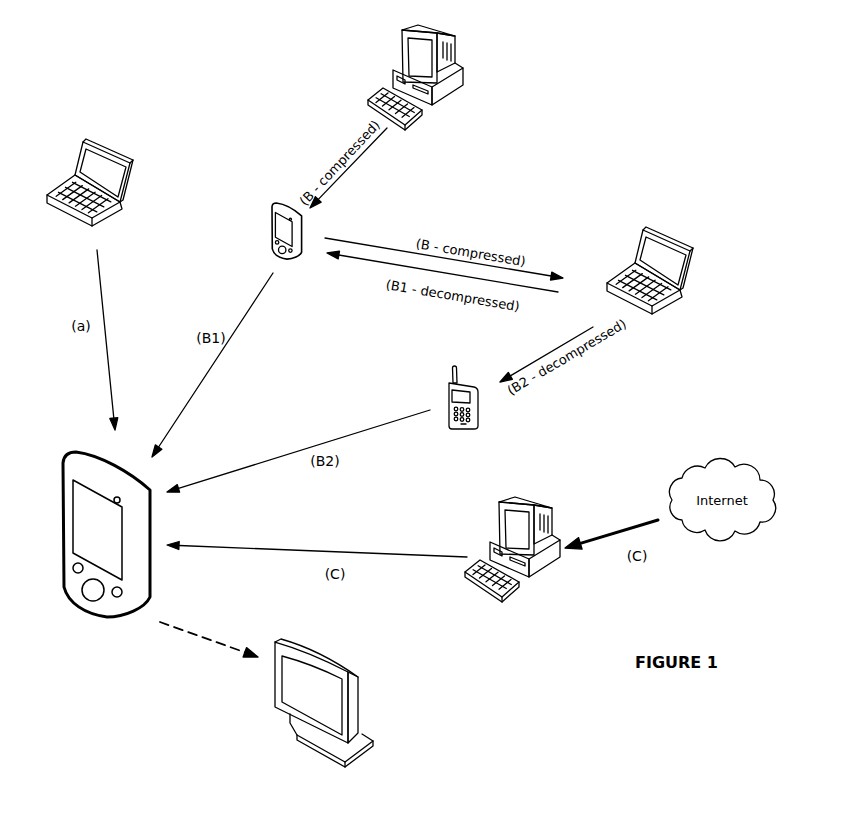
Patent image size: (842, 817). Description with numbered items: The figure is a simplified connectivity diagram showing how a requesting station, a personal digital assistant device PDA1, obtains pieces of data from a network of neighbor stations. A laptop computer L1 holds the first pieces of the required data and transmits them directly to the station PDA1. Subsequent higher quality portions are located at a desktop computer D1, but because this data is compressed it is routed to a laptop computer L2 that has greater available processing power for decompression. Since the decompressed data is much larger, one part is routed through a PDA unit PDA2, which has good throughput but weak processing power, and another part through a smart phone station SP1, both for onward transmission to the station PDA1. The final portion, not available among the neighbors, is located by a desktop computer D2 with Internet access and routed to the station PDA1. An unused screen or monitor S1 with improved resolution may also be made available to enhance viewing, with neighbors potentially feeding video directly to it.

The desktop computer D1 is at (401, 77).
The laptop computer L1 is at (87, 182).
The laptop computer L2 is at (671, 270).
The PDA unit PDA2 is at (255, 231).
The smart phone station SP1 is at (440, 394).
The personal digital assistant device PDA1 is at (90, 551).
The desktop computer D2 is at (516, 557).
The screen or monitor S1 is at (302, 703).